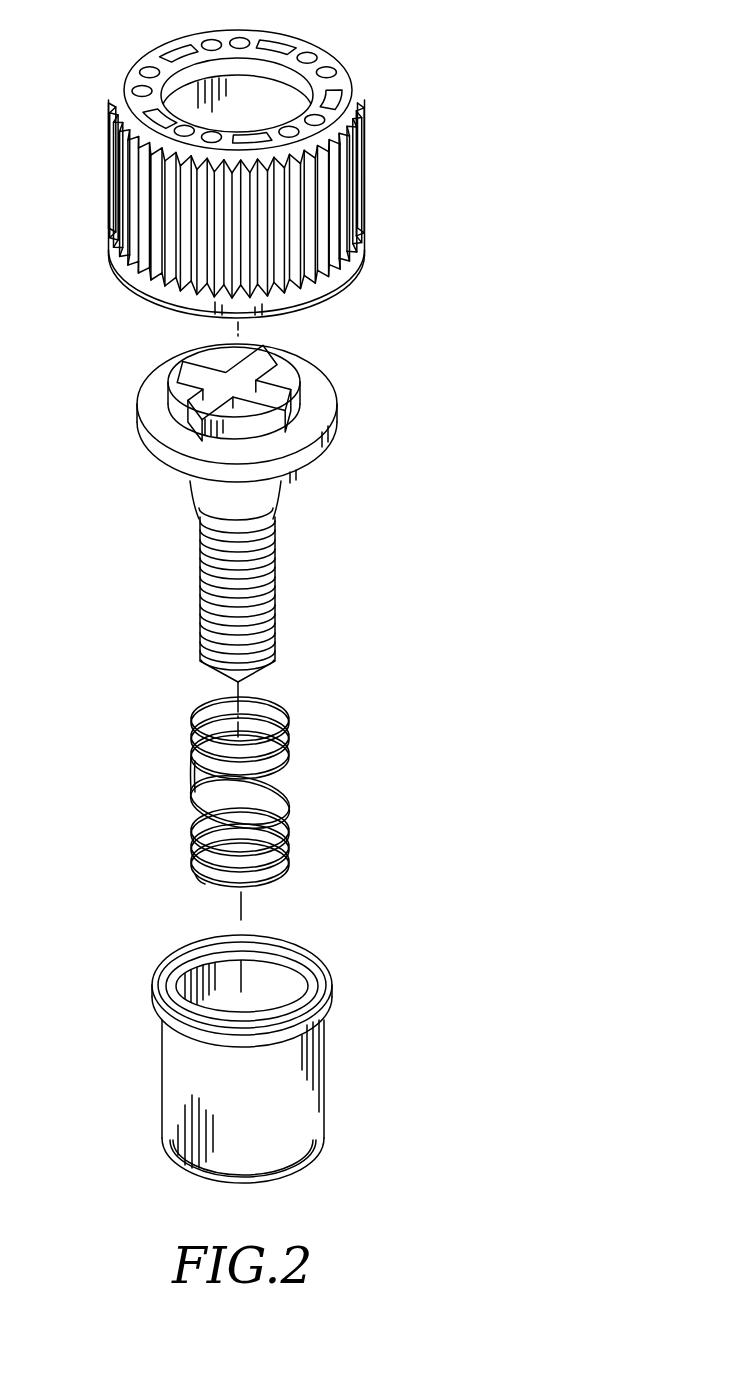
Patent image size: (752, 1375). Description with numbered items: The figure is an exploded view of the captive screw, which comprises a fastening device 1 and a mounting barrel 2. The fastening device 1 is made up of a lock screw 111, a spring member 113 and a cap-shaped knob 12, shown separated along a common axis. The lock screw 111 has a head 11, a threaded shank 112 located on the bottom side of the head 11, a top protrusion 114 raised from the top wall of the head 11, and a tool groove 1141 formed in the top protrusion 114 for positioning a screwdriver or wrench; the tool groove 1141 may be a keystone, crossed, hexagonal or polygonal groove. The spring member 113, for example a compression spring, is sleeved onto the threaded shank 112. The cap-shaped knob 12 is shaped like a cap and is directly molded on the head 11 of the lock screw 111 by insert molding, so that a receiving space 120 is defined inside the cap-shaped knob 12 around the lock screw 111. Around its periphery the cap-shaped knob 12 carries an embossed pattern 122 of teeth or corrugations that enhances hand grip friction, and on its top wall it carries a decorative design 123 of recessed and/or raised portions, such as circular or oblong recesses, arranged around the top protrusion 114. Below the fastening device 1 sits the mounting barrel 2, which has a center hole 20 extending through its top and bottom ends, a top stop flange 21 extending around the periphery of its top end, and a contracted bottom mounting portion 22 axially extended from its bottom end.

The fastening device 1 is at (83, 198).
The cap-shaped knob 12 is at (364, 108).
The receiving space 120 is at (258, 106).
The embossed pattern 122 is at (353, 173).
The decorative design 123 is at (145, 65).
The head 11 is at (333, 437).
The top protrusion 114 is at (283, 381).
The tool groove 1141 is at (263, 363).
The lock screw 111 is at (272, 490).
The threaded shank 112 is at (263, 598).
The spring member 113 is at (290, 798).
The mounting barrel 2 is at (310, 1083).
The center hole 20 is at (263, 1006).
The top stop flange 21 is at (310, 957).
The contracted bottom mounting portion 22 is at (290, 1173).